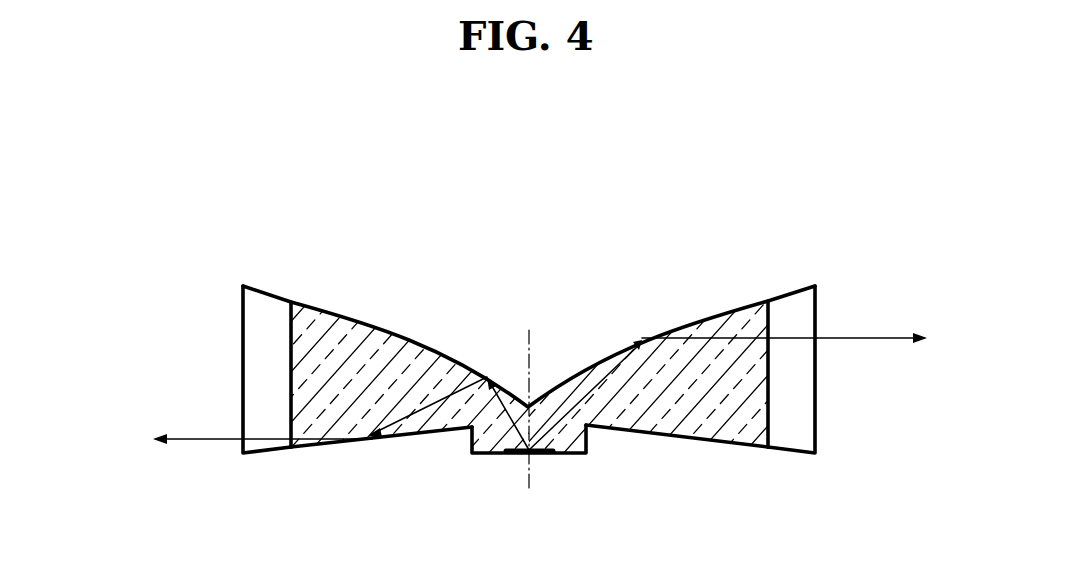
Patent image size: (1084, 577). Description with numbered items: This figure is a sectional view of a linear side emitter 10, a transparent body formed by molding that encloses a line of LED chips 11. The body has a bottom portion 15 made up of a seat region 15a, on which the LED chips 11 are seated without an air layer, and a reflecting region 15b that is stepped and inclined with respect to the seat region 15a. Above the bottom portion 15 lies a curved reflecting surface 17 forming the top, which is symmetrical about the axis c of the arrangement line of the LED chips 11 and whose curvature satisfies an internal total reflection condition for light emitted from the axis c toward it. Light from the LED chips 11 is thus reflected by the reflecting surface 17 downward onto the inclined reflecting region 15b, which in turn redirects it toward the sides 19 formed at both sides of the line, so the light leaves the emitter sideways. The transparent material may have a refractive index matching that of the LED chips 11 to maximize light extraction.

The linear side emitter 10 is at (664, 245).
The LED chips 11 is at (540, 456).
The bottom portion 15 is at (592, 466).
The seat region 15a is at (472, 450).
The reflecting region 15b is at (680, 430).
The reflecting surface 17 is at (383, 328).
The sides 19 is at (260, 355).
The axis c is at (531, 336).